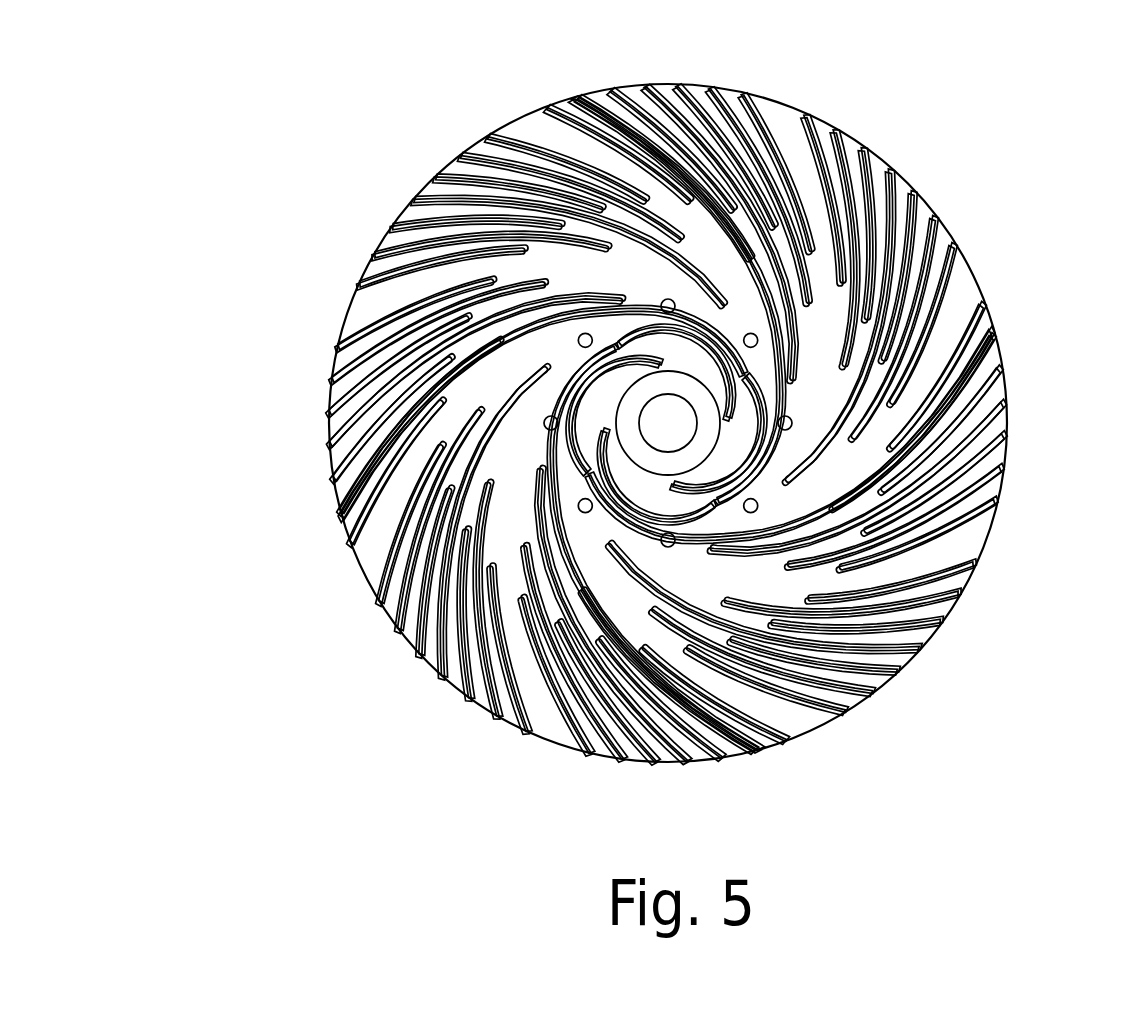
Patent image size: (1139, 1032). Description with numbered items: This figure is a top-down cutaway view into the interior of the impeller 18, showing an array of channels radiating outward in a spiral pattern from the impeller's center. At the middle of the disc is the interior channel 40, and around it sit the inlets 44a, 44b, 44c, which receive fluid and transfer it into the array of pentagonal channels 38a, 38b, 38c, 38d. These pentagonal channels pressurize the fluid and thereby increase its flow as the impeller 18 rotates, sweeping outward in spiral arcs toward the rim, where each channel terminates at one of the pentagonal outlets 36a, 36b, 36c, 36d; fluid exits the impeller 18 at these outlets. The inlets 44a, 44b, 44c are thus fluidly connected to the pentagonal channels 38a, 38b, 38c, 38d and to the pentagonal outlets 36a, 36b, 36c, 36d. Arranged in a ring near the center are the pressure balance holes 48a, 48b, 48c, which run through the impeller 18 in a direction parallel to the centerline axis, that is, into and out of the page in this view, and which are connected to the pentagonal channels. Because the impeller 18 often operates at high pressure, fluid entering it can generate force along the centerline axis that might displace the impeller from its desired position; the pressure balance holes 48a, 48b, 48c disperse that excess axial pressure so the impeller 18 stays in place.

The impeller 18 is at (328, 387).
The pentagonal outlet 36a is at (538, 730).
The pentagonal outlet 36b is at (595, 747).
The pentagonal outlet 36c is at (668, 757).
The pentagonal outlet 36d is at (728, 750).
The pentagonal channel 38a is at (877, 368).
The pentagonal channel 38b is at (885, 413).
The pentagonal channel 38c is at (883, 450).
The pentagonal channel 38d is at (905, 478).
The interior channel 40 is at (669, 394).
The inlet 44a is at (657, 497).
The inlet 44b is at (730, 440).
The inlet 44c is at (688, 362).
The pressure balance hole 48a is at (579, 500).
The pressure balance hole 48b is at (548, 416).
The pressure balance hole 48c is at (586, 333).